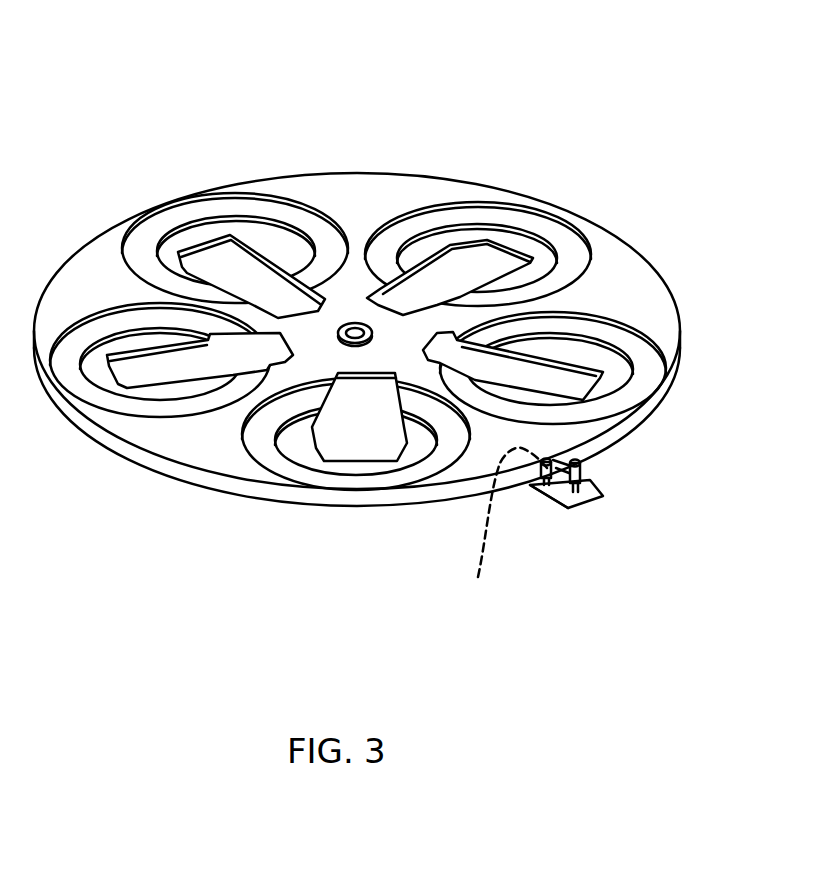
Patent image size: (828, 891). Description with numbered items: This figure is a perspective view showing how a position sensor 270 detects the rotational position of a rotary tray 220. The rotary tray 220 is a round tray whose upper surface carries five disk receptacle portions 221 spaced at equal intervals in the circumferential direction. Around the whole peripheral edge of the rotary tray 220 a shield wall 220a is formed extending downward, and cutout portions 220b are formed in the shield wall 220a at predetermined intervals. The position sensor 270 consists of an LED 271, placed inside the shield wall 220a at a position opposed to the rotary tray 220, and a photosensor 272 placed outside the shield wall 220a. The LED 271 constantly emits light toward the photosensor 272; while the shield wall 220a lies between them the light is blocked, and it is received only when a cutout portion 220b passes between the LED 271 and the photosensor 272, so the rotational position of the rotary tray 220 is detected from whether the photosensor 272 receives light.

The rotary tray 220 is at (365, 190).
The shield wall 220a is at (148, 461).
The cutout portion 220b is at (582, 468).
The disk receptacle portion 221 is at (107, 320).
The position sensor 270 is at (624, 612).
The LED 271 is at (503, 529).
The photosensor 272 is at (586, 483).